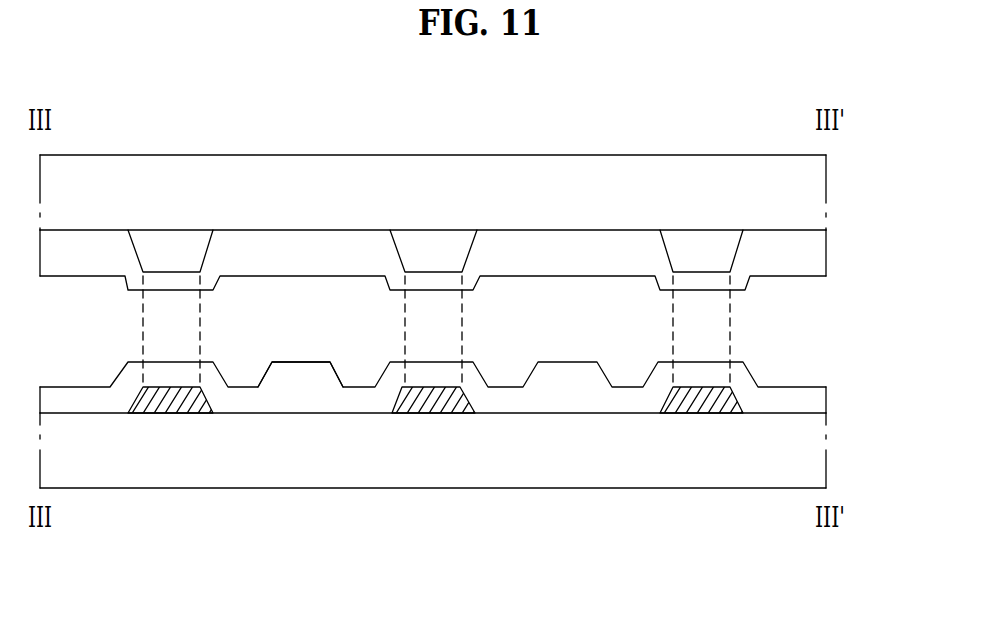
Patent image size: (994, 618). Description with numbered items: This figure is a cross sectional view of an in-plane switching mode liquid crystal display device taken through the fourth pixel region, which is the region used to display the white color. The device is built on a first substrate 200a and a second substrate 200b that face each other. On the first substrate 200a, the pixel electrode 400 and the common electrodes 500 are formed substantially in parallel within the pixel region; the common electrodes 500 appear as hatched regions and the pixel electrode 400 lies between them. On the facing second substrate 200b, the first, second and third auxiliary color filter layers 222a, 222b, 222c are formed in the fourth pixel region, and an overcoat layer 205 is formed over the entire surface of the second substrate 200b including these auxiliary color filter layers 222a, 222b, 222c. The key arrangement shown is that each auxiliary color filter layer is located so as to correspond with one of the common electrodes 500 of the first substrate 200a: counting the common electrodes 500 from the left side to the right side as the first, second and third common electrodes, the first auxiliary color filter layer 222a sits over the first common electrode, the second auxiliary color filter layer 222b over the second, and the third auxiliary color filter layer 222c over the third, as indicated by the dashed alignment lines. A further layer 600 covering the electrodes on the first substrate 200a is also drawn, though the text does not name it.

The first substrate 200a is at (820, 445).
The second substrate 200b is at (818, 195).
The overcoat layer 205 is at (818, 255).
The first auxiliary color filter layer 222a is at (192, 232).
The second auxiliary color filter layer 222b is at (453, 235).
The third auxiliary color filter layer 222c is at (723, 235).
The pixel electrode 400 is at (302, 377).
The common electrode 500 is at (172, 402).
The passivation layer 600 is at (820, 400).